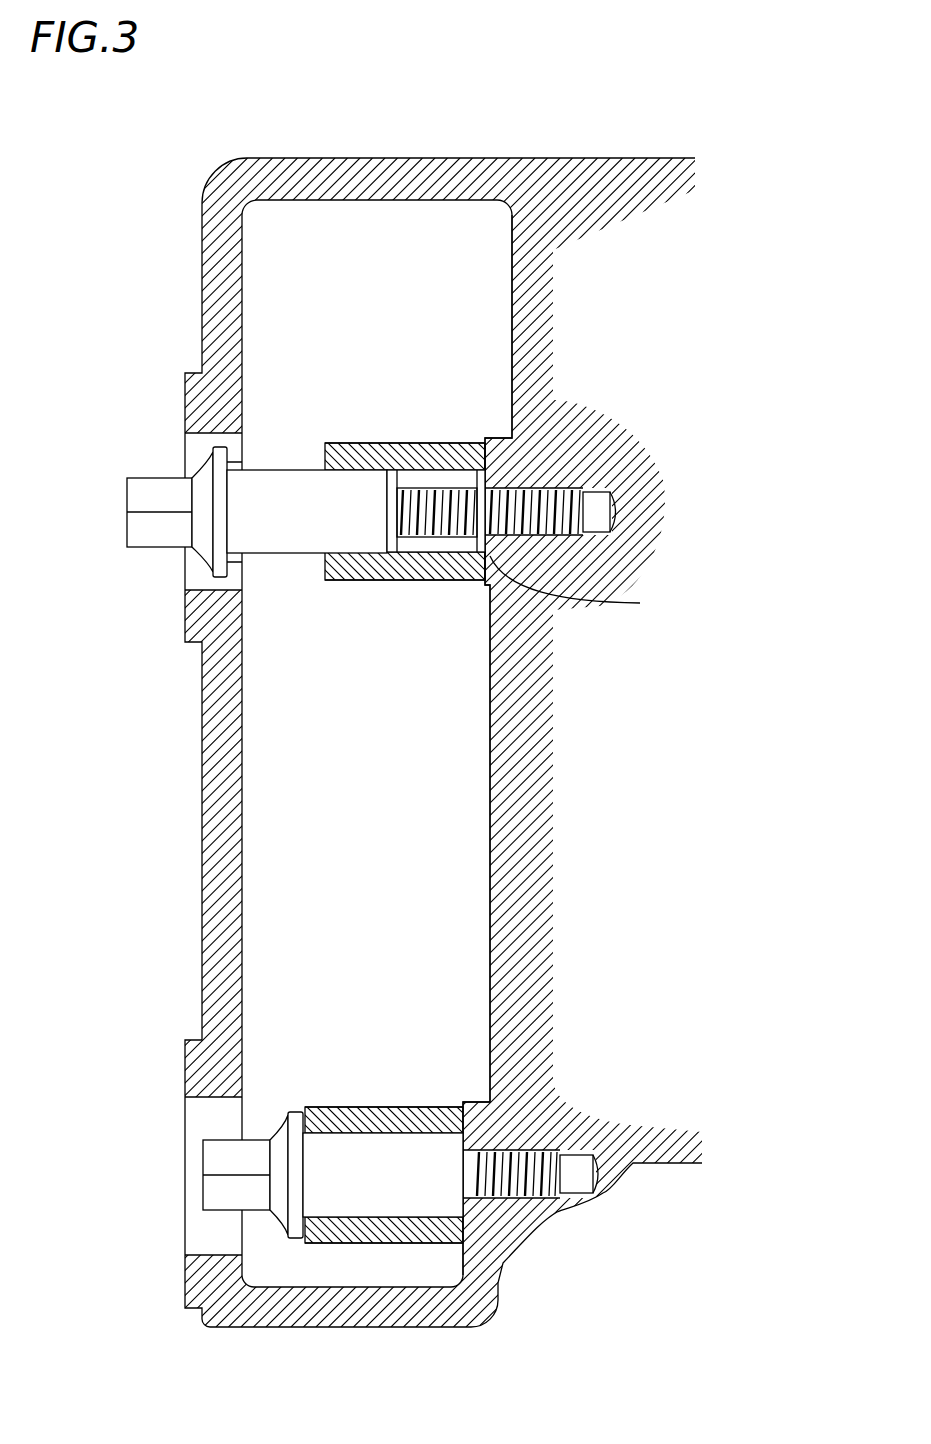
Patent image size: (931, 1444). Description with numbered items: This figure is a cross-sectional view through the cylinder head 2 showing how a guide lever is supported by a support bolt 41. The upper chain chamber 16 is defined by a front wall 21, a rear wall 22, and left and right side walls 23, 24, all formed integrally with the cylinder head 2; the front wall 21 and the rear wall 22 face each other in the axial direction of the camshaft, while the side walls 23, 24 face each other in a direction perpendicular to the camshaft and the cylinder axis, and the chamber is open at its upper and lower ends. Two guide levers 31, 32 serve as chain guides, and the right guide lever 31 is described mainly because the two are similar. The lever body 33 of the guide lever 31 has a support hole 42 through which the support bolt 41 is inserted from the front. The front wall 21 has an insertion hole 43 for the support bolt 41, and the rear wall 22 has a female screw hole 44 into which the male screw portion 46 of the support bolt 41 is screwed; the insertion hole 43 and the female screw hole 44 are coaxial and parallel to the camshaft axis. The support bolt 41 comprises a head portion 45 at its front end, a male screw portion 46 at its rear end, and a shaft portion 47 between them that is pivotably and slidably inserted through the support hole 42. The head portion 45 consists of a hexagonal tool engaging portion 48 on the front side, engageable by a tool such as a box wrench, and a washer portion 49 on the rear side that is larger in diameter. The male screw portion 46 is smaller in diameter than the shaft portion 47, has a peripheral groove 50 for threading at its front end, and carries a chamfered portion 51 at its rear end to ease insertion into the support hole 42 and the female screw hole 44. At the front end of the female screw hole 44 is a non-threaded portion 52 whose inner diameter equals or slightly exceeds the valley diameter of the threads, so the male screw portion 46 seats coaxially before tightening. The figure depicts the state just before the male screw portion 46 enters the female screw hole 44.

The cylinder head 2 is at (178, 172).
The upper chain chamber 16 is at (363, 787).
The front wall 21 is at (212, 793).
The rear wall 22 is at (503, 817).
The left side wall 23 is at (388, 1312).
The right side wall 24 is at (357, 168).
The right guide lever 31 is at (360, 443).
The left guide lever 32 is at (333, 1112).
The lever body 33 is at (401, 470).
The support bolt 41 is at (317, 507).
The support hole 42 is at (436, 478).
The insertion hole 43 is at (193, 577).
The female screw hole 44 is at (543, 537).
The head portion 45 is at (148, 523).
The male screw portion 46 is at (443, 527).
The shaft portion 47 is at (290, 522).
The tool engaging portion 48 is at (150, 495).
The washer portion 49 is at (236, 458).
The peripheral groove 50 is at (393, 552).
The chamfered portion 51 is at (480, 443).
The non-threaded portion 52 is at (500, 577).